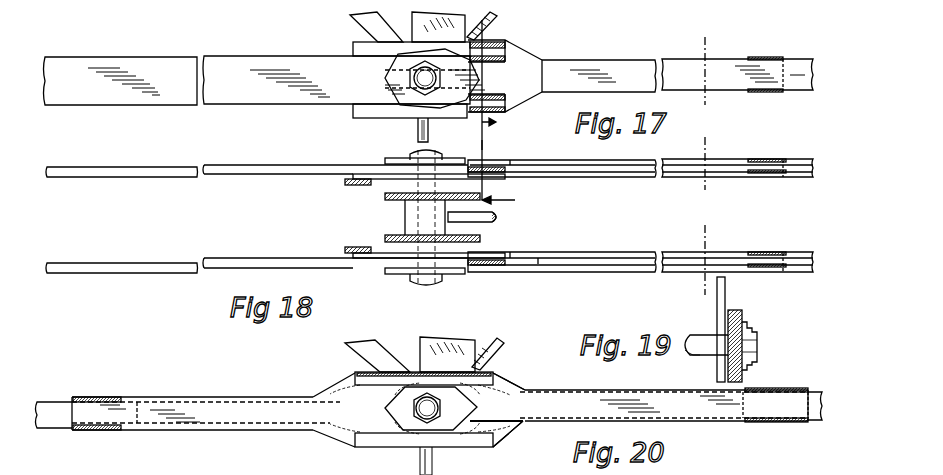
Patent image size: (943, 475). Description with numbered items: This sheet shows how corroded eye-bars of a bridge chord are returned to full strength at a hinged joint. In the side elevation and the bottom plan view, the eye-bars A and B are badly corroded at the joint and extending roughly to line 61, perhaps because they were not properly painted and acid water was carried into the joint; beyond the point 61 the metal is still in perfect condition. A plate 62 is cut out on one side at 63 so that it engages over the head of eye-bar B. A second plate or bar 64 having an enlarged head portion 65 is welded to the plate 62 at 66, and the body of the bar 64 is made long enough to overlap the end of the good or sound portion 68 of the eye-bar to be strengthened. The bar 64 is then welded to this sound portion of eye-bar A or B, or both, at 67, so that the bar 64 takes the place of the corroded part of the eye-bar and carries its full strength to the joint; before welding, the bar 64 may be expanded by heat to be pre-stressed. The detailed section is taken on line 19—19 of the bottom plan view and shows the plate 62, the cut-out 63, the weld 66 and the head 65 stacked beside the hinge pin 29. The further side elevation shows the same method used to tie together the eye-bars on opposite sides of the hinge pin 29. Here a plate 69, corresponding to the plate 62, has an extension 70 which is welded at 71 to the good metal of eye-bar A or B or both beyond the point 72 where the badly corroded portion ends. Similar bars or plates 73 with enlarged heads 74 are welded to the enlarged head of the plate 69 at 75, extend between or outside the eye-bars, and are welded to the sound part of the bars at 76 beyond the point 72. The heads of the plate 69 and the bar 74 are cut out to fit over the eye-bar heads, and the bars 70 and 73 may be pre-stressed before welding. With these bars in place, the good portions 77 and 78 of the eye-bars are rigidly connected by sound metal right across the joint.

In FIG. 17, the section line 19— 19 is at (520, 85).
In FIG. 18, the section line 19— 19 is at (519, 176).
In FIG. 17, the hinge pin 29 is at (410, 82).
In FIG. 18, the hinge pin 29 is at (405, 230).
In FIG. 19, the hinge pin 29 is at (704, 355).
In FIG. 20, the hinge pin 29 is at (440, 408).
In FIG. 17, the line 61 is at (712, 65).
In FIG. 18, the line 61 is at (714, 168).
In FIG. 17, the plate 62 is at (358, 46).
In FIG. 18, the plate 62 is at (366, 172).
In FIG. 17, the cut-out 63 is at (478, 40).
In FIG. 19, the cut-out 63 is at (730, 310).
In FIG. 17, the second plate or bar 64 is at (592, 60).
In FIG. 18, the second plate or bar 64 is at (628, 166).
In FIG. 17, the enlarged head portion 65 is at (512, 52).
In FIG. 18, the enlarged head portion 65 is at (520, 165).
In FIG. 19, the enlarged head portion 65 is at (752, 328).
In FIG. 17, the weld 66 is at (490, 43).
In FIG. 18, the weld 66 is at (492, 167).
In FIG. 19, the weld 66 is at (742, 318).
In FIG. 17, the weld 67 is at (764, 57).
In FIG. 18, the weld 67 is at (764, 160).
In FIG. 17, the sound portion 68 is at (800, 82).
In FIG. 18, the sound portion 68 is at (798, 170).
In FIG. 20, the plate 69 is at (405, 372).
In FIG. 20, the extension 70 is at (238, 396).
In FIG. 20, the weld 71 is at (92, 397).
In FIG. 20, the point 72 is at (150, 398).
In FIG. 20, the bar or plate 73 is at (575, 392).
In FIG. 20, the enlarged head 74 is at (510, 385).
In FIG. 20, the weld 75 is at (345, 393).
In FIG. 20, the weld 76 is at (776, 388).
In FIG. 20, the good portion 77 is at (52, 428).
In FIG. 20, the good portion 78 is at (814, 414).
In FIG. 18, the eye-bar A is at (575, 161).
In FIG. 18, the eye-bar B is at (626, 178).